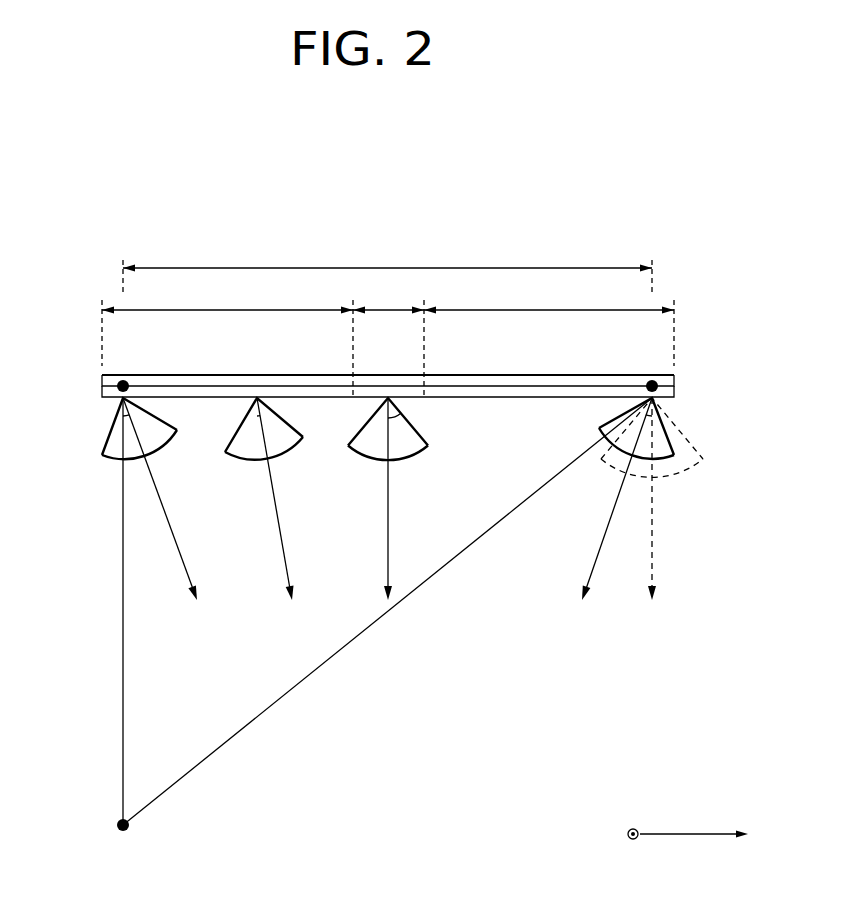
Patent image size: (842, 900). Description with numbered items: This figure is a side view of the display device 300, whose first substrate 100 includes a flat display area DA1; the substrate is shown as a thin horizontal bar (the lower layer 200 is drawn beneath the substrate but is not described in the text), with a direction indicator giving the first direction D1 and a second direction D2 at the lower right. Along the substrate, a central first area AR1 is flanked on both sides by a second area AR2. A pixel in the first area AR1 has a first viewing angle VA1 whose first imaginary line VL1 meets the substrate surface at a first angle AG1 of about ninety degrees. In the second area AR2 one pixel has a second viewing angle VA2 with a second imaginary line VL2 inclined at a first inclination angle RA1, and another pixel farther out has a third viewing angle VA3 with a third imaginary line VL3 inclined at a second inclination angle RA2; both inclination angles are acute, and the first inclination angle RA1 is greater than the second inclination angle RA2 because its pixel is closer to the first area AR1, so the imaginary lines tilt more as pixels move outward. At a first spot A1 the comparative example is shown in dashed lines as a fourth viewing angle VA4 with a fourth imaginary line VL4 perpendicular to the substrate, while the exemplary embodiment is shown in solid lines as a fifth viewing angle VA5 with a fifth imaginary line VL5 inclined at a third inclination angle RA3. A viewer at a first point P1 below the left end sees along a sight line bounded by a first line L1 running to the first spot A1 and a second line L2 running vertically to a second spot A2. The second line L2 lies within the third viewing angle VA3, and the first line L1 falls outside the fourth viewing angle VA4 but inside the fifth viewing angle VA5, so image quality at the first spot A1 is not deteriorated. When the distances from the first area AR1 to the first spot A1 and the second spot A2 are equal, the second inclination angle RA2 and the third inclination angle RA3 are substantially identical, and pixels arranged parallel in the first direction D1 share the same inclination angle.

The display device 300 is at (426, 317).
The first substrate 100 is at (670, 380).
The sensor unit 200 is at (677, 392).
The first spot A1 is at (652, 386).
The second spot A2 is at (120, 386).
The display area DA1 is at (387, 269).
The first area AR1 is at (388, 340).
The second area AR2 is at (388, 324).
The first inclination angle RA1 is at (272, 407).
The second inclination angle RA2 is at (143, 407).
The third inclination angle RA3 is at (637, 402).
The first angle AG1 is at (408, 405).
The first viewing angle VA1 is at (398, 458).
The second viewing angle VA2 is at (277, 455).
The third viewing angle VA3 is at (152, 455).
The fourth viewing angle VA4 is at (693, 447).
The fifth viewing angle VA5 is at (612, 420).
The first imaginary line VL1 is at (388, 515).
The second imaginary line VL2 is at (279, 515).
The third imaginary line VL3 is at (167, 515).
The fourth imaginary line VL4 is at (652, 515).
The fifth imaginary line VL5 is at (611, 515).
The first line L1 is at (300, 682).
The second line L2 is at (122, 609).
The first point P1 is at (124, 837).
The first direction D1 is at (619, 834).
The second direction D2 is at (708, 834).